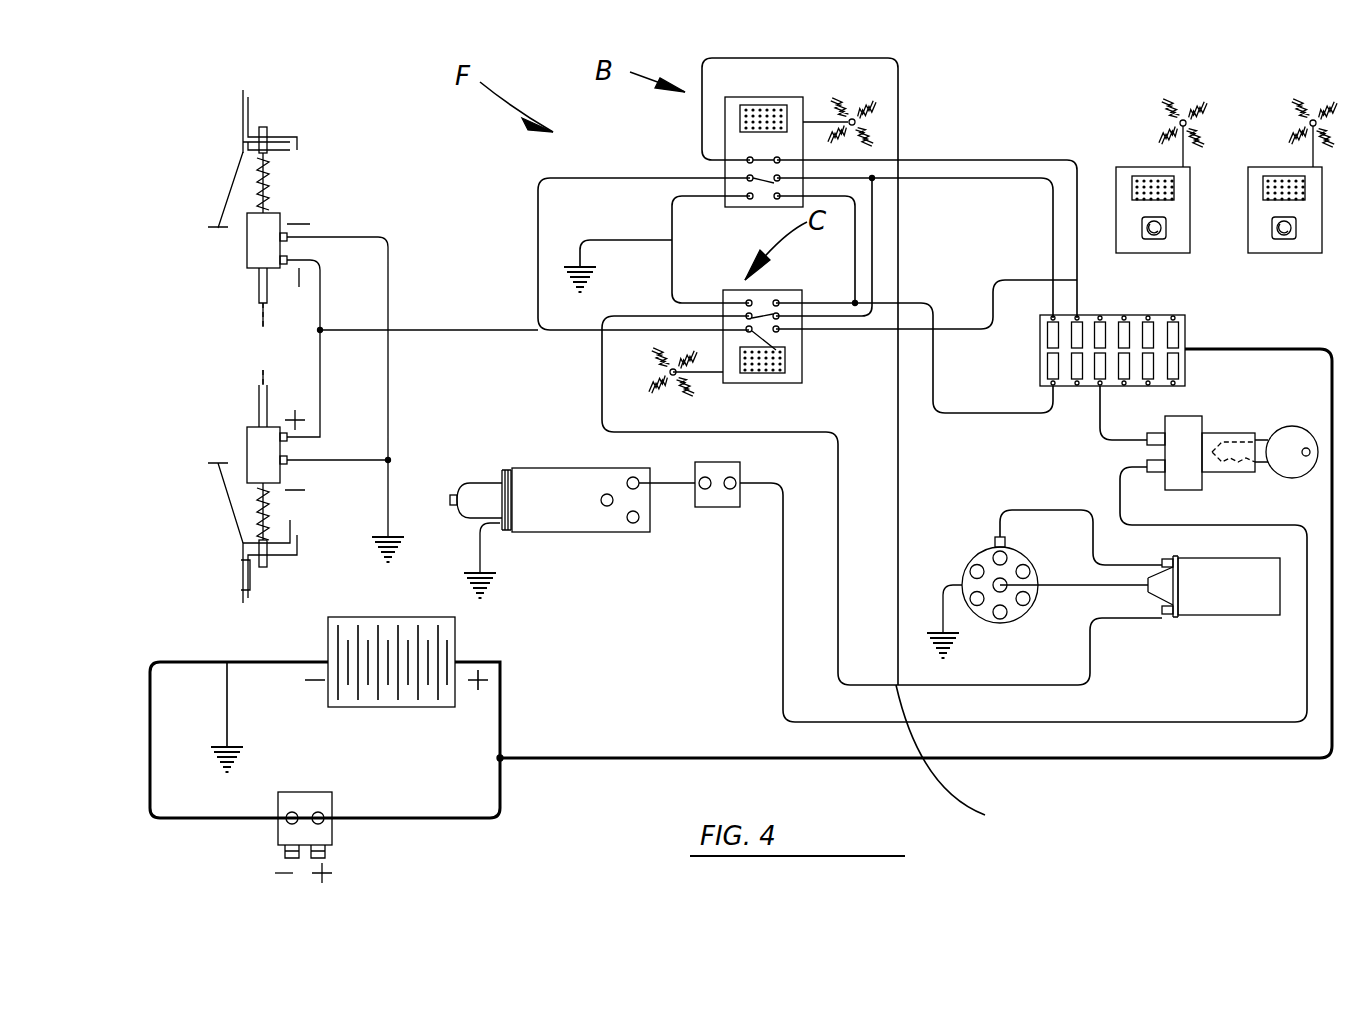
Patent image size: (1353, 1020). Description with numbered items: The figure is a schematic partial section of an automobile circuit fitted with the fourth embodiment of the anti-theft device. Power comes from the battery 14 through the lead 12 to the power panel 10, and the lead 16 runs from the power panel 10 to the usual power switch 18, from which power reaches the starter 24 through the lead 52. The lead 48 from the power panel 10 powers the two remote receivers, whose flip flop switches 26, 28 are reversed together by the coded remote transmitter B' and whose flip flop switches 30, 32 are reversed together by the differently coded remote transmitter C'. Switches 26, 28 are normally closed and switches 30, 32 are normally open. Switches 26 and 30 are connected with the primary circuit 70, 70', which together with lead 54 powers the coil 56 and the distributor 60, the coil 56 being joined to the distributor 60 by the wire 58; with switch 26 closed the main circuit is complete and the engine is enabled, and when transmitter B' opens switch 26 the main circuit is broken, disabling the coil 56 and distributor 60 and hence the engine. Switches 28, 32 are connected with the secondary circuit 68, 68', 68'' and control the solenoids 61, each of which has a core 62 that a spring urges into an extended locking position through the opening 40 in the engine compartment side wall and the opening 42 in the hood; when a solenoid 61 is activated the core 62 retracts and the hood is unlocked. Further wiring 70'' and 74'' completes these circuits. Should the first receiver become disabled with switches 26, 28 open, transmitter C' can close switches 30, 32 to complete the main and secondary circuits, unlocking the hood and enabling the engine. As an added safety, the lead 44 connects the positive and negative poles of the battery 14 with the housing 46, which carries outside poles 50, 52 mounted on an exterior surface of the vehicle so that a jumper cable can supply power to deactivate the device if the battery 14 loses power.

The power panel 10 is at (1187, 330).
The lead 12 is at (1052, 760).
The battery 14 is at (427, 698).
The lead 16 is at (1100, 420).
The power switch 18 is at (1200, 416).
The starter 24 is at (552, 505).
The flip flop switch 26 is at (750, 160).
The flip flop switch 28 is at (758, 185).
The flip flop switch 30 is at (768, 303).
The flip flop switch 32 is at (778, 352).
The opening 40 is at (268, 150).
The opening 42 is at (268, 140).
The lead 44 is at (152, 765).
The housing 46 is at (305, 792).
The lead 48 is at (945, 375).
The negative pole 50 is at (292, 858).
The positive pole 52 is at (318, 858).
The lead 54 is at (1100, 660).
The coil 56 is at (1232, 600).
The distributor lead 58 is at (1000, 510).
The distributor 60 is at (975, 555).
The solenoid 61 is at (263, 240).
The core 62 is at (263, 385).
The secondary circuit 68 is at (656, 255).
The secondary circuit 68' is at (871, 371).
The relay wiring 68'' is at (1101, 180).
The primary circuit 70 is at (882, 395).
The primary circuit 70' is at (926, 292).
The relay wiring 70'' is at (966, 760).
The relay wiring 74'' is at (914, 182).
The remote transmitter B' is at (1163, 193).
The remote transmitter C' is at (1294, 196).